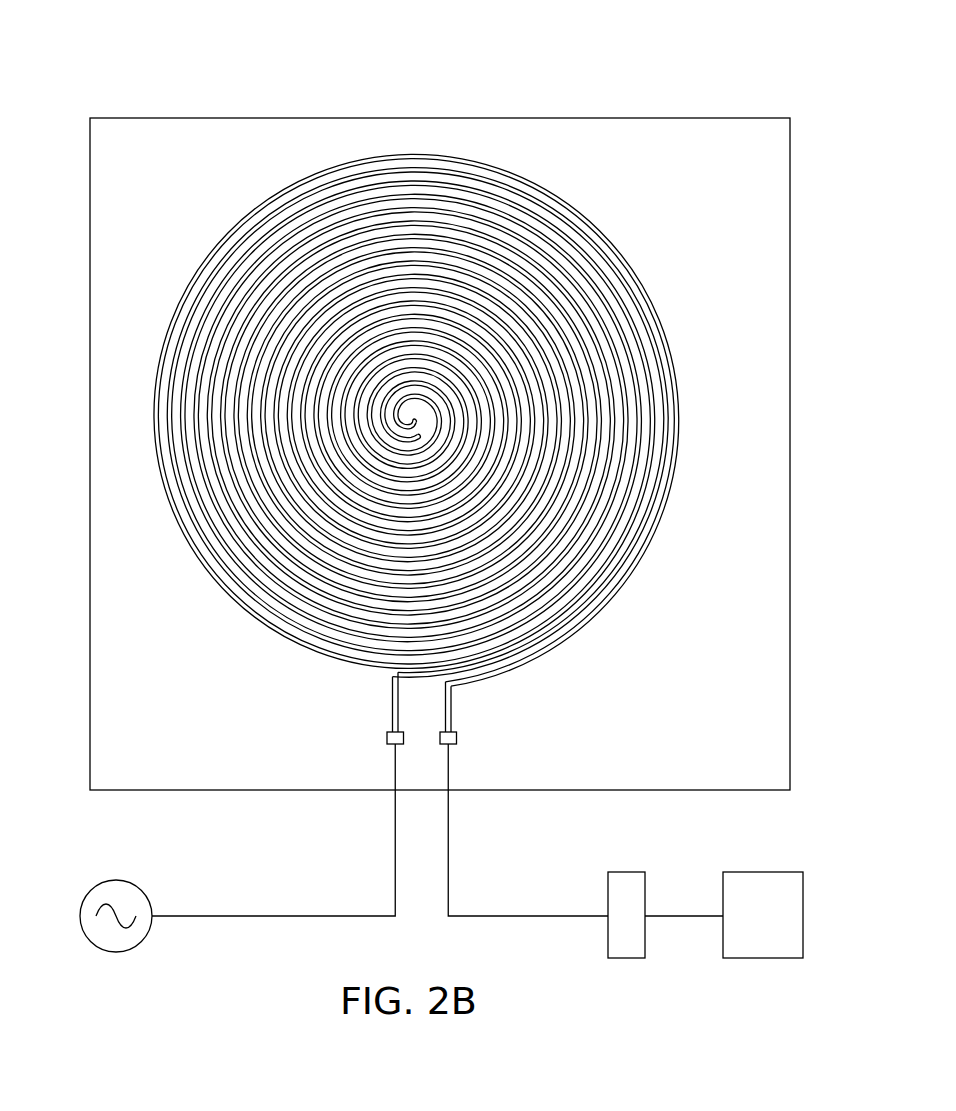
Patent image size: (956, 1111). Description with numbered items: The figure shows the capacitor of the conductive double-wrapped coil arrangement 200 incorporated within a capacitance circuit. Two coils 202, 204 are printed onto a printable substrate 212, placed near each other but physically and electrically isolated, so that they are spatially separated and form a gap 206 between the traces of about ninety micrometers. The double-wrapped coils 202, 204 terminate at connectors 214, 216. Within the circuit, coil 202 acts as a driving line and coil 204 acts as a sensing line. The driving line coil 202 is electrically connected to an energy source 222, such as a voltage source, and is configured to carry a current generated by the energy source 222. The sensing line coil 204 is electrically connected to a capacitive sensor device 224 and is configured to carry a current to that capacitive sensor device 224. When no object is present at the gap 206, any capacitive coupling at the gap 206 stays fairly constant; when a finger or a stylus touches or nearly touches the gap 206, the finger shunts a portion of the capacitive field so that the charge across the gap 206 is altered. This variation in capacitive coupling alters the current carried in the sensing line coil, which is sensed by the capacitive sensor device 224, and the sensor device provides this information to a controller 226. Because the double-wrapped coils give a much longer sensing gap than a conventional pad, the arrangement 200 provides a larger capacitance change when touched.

The conductive double-wrapped coil arrangement 200 is at (596, 87).
The coil 202 is at (538, 657).
The coil 204 is at (393, 692).
The gap 206 is at (264, 238).
The printable substrate 212 is at (724, 118).
The connector 214 is at (386, 740).
The connector 216 is at (457, 742).
The energy source 222 is at (118, 880).
The capacitive sensor device 224 is at (628, 872).
The controller 226 is at (768, 872).